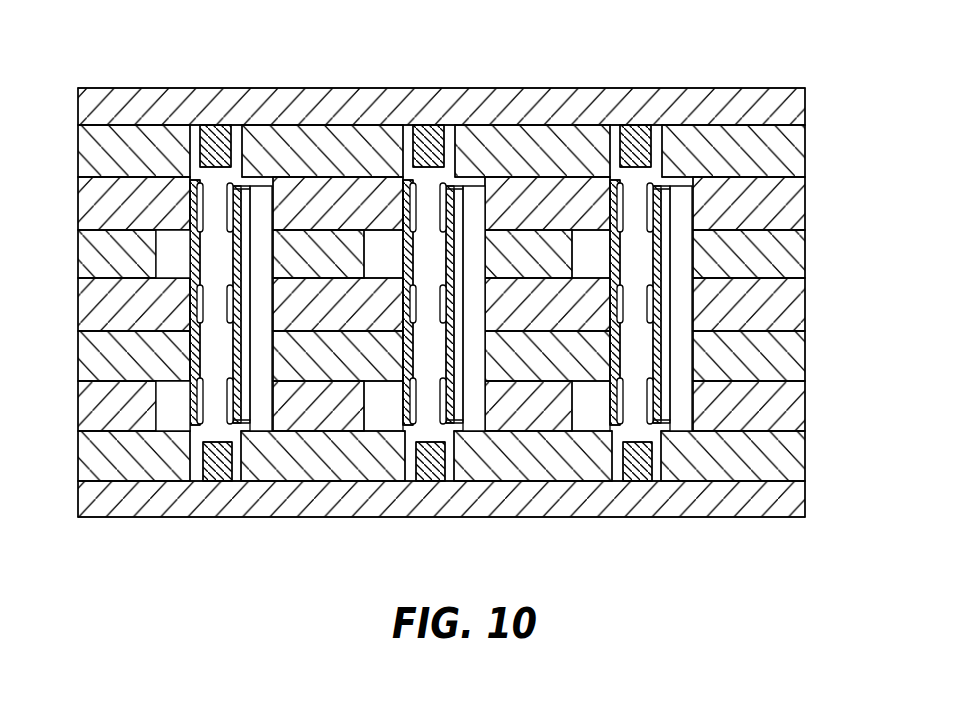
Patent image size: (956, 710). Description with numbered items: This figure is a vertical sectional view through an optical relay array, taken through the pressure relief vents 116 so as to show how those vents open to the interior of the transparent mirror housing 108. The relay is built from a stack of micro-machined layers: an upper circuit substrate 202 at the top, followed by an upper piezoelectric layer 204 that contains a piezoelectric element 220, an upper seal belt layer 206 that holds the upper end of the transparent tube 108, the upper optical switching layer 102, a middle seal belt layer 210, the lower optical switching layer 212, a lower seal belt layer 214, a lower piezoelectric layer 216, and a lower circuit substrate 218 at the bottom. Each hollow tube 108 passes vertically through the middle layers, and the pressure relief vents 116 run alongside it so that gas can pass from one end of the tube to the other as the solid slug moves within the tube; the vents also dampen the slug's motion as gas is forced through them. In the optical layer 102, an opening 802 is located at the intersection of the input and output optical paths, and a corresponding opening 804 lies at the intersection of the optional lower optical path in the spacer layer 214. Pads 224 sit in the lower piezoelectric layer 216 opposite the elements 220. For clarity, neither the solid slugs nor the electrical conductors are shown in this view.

The upper circuit substrate 202 is at (806, 106).
The upper piezoelectric layer 204 is at (806, 151).
The upper seal belt layer 206 is at (806, 203).
The upper optical switching layer 102 is at (806, 254).
The middle seal belt layer 210 is at (806, 304).
The lower optical switching layer 212 is at (806, 356).
The lower seal belt layer 214 is at (806, 406).
The lower piezoelectric layer 216 is at (806, 456).
The lower circuit substrate 218 is at (806, 499).
The piezoelectric element 220 is at (213, 133).
The lower contact pad 224 is at (217, 460).
The pressure relief vent 116 is at (262, 412).
The transparent tube 108 is at (193, 252).
The opening 802 is at (174, 257).
The opening 804 is at (175, 404).